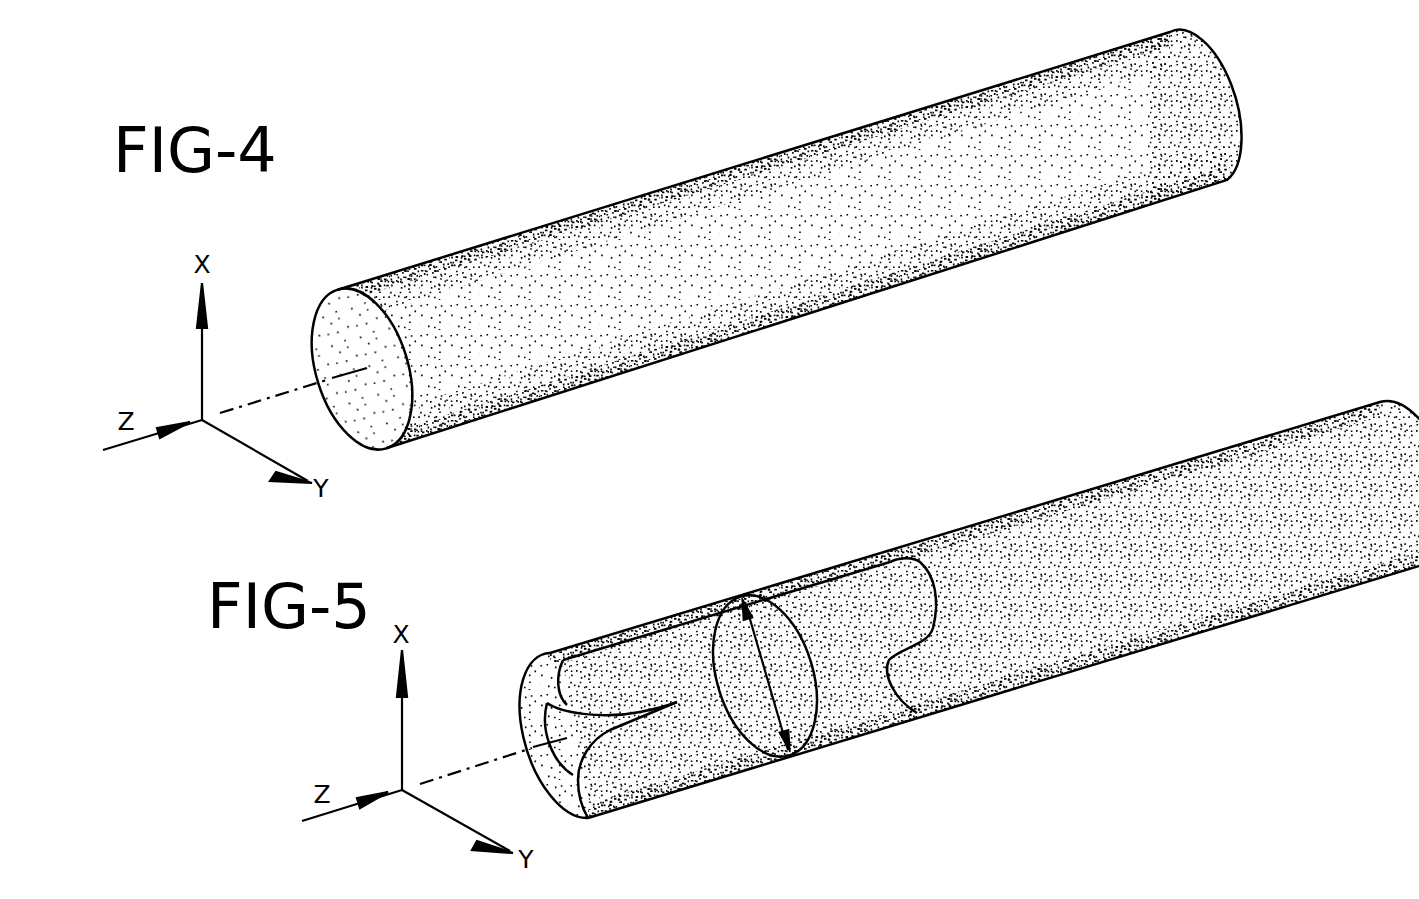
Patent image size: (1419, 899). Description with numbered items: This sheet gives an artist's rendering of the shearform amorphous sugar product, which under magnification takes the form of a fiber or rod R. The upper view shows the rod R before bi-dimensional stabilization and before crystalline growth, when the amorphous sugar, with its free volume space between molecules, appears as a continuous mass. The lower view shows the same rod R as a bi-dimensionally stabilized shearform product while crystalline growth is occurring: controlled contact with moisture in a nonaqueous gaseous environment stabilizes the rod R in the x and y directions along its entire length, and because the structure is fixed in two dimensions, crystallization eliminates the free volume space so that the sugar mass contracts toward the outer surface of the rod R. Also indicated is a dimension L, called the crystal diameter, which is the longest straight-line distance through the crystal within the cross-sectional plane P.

In FIG. 4, the rod R is at (743, 163).
In FIG. 5, the rod R is at (1068, 494).
In FIG. 5, the dimension L (crystal diameter) L is at (768, 668).
In FIG. 5, the cross-sectional plane P is at (757, 727).